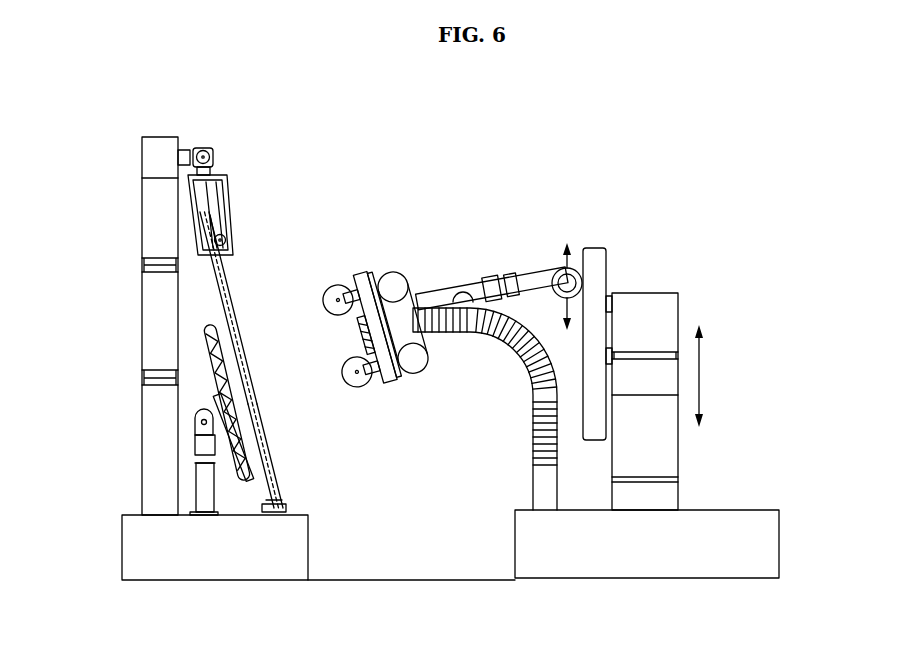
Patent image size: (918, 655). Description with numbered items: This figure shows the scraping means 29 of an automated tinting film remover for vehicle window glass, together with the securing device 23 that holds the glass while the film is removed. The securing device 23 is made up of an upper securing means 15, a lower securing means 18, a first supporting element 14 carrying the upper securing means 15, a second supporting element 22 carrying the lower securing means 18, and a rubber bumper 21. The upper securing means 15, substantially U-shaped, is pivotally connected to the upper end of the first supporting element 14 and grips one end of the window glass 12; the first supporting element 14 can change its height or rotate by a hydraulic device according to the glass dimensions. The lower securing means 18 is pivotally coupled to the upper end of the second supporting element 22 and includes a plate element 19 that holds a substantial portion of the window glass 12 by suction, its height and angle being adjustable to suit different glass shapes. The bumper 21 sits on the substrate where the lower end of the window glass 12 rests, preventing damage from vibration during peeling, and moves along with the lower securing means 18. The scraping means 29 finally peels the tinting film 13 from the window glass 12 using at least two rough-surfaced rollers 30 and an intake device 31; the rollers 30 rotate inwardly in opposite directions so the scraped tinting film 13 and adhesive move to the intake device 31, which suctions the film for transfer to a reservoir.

The window glass 12 is at (213, 294).
The tinting film 13 is at (275, 478).
The first supporting element 14 is at (158, 218).
The upper securing means 15 is at (238, 175).
The lower securing means 18 is at (207, 357).
The plate element 19 is at (246, 485).
The bumper 21 is at (273, 514).
The second supporting element 22 is at (200, 484).
The securing device 23 is at (238, 287).
The scraping means 29 is at (425, 288).
The rollers 30 is at (362, 386).
The intake device 31 is at (350, 342).